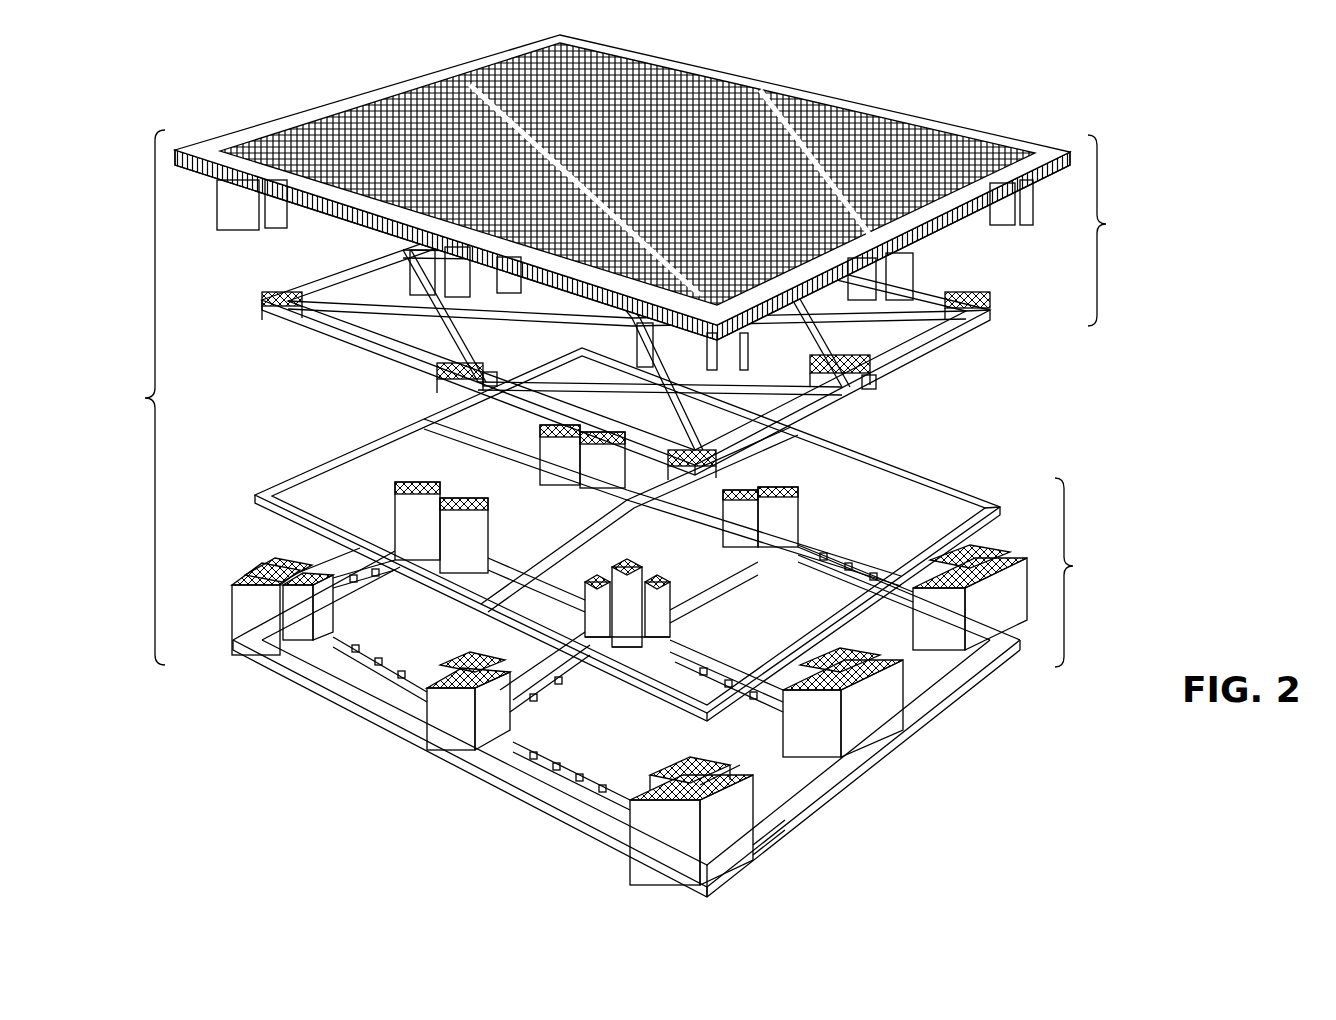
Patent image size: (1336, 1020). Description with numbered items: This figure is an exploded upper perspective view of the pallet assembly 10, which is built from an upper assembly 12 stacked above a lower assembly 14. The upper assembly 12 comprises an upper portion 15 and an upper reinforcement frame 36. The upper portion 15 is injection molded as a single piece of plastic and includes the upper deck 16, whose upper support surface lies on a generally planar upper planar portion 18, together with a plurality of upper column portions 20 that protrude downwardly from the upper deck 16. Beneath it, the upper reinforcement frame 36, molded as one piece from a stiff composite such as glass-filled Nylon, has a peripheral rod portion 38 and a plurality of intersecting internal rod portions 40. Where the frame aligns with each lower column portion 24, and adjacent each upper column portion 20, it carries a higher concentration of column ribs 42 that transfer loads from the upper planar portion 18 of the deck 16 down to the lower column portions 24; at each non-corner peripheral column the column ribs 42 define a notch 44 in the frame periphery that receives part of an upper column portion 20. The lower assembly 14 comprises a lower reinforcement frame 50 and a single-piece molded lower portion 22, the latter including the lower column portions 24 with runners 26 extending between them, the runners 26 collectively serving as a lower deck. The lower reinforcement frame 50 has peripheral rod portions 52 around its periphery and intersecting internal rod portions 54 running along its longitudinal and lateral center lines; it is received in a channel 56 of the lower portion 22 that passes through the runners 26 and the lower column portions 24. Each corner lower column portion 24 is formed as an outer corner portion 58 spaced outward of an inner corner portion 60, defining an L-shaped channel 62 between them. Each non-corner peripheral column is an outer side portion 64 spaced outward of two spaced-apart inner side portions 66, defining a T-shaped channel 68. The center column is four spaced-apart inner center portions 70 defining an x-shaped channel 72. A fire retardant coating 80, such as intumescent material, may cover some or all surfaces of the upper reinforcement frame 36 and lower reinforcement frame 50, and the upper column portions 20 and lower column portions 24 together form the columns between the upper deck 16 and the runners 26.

The pallet assembly 10 is at (146, 398).
The upper assembly 12 is at (663, 256).
The lower assembly 14 is at (652, 630).
The upper portion 15 is at (640, 232).
The upper deck 16 is at (940, 110).
The upper planar portion 18 is at (830, 95).
The upper column portions 20 is at (245, 210).
The lower portion 22 is at (635, 698).
The lower column portions 24 is at (265, 665).
The runners 26 is at (975, 652).
The upper reinforcement frame 36 is at (634, 340).
The peripheral rod portion 38 is at (920, 365).
The internal rod portions 40 is at (443, 320).
The column ribs 42 is at (265, 300).
The notch 44 is at (488, 388).
The lower reinforcement frame 50 is at (640, 534).
The peripheral rod portion 52 is at (925, 545).
The internal rod portions 54 is at (548, 458).
The channel 56 is at (780, 820).
The outer corner portion 58 is at (270, 640).
The inner corner portion 60 is at (375, 540).
The L-shaped channel 62 is at (262, 560).
The outer side portion 64 is at (905, 700).
The inner side portions 66 is at (475, 660).
The T-shaped channel 68 is at (440, 720).
The inner center portions 70 is at (625, 570).
The x-shaped channel 72 is at (630, 660).
The fire retardant coating 80 is at (990, 330).